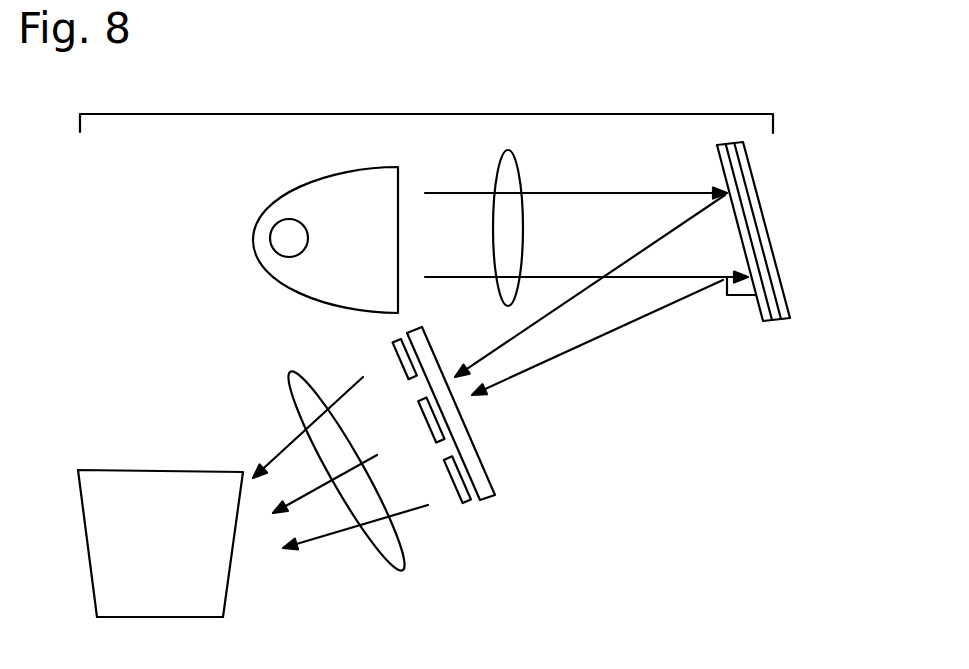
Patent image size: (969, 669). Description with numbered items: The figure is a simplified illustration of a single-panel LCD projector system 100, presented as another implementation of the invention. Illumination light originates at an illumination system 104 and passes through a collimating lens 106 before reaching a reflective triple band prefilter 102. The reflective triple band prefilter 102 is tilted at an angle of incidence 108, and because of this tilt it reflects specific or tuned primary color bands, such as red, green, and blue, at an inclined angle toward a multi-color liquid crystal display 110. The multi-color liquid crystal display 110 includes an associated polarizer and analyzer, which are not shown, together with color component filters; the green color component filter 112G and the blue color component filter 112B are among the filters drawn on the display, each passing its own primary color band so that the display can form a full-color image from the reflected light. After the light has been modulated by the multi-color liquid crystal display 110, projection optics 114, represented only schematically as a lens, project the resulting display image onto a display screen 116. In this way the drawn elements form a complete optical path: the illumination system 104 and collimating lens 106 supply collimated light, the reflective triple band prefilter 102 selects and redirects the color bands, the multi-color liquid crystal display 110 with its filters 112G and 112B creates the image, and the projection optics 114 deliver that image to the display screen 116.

The single-panel LCD projector system 100 is at (455, 113).
The reflective triple band prefilter 102 is at (786, 338).
The illumination system 104 is at (287, 300).
The collimating lens 106 is at (518, 173).
The angle of incidence 108 is at (755, 302).
The multi-color liquid crystal display 110 is at (489, 520).
The green color component filter 112G is at (397, 342).
The blue color component filter 112B is at (477, 503).
The projection optics 114 is at (289, 374).
The display screen 116 is at (117, 470).